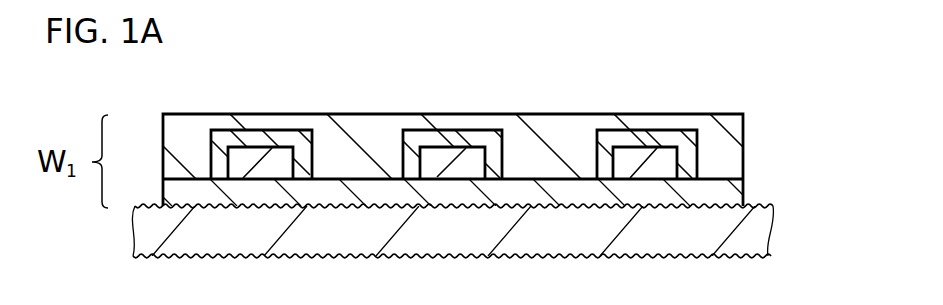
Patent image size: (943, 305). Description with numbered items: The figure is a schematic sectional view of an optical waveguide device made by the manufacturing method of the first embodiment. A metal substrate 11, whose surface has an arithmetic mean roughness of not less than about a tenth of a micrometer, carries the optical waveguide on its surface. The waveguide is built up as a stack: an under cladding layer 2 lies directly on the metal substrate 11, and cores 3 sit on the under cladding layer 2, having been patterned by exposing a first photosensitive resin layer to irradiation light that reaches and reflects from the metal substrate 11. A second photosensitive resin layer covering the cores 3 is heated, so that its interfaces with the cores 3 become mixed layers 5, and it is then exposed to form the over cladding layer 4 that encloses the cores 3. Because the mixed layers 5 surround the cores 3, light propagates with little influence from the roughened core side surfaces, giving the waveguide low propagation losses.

The under cladding layer 2 is at (727, 195).
The cores 3 is at (437, 163).
The over cladding layer 4 is at (565, 132).
The mixed layers 5 is at (495, 130).
The metal substrate 11 is at (757, 233).